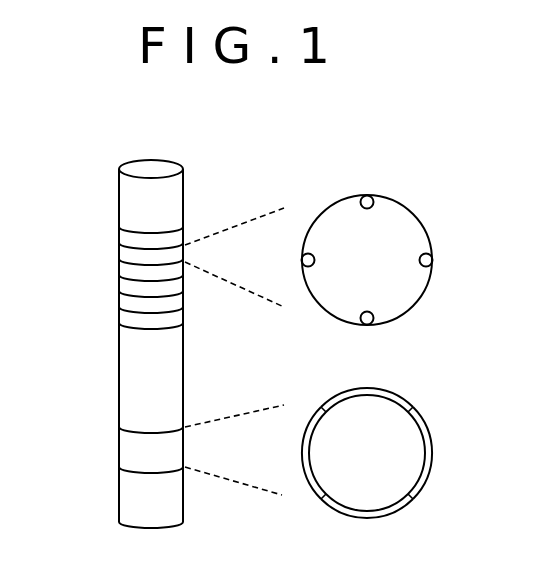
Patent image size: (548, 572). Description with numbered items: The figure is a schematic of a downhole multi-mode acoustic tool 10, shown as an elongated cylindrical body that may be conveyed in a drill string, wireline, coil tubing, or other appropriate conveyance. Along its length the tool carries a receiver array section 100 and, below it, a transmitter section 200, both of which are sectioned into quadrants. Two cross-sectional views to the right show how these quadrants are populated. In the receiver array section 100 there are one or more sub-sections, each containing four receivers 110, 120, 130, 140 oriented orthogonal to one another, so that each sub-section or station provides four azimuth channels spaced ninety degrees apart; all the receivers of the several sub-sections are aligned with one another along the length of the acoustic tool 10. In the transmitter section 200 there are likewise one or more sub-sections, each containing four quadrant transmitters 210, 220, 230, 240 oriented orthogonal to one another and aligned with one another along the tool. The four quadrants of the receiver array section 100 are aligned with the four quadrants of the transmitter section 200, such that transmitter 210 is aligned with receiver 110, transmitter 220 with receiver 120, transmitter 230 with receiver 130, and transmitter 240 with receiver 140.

The downhole acoustic tool 10 is at (104, 330).
The receiver array section 100 is at (92, 225).
The transmitter section 200 is at (92, 425).
The receiver 110 is at (367, 216).
The receiver 120 is at (405, 261).
The receiver 130 is at (367, 305).
The receiver 140 is at (329, 261).
The transmitter 210 is at (367, 409).
The transmitter 220 is at (404, 453).
The transmitter 230 is at (367, 499).
The transmitter 240 is at (328, 453).